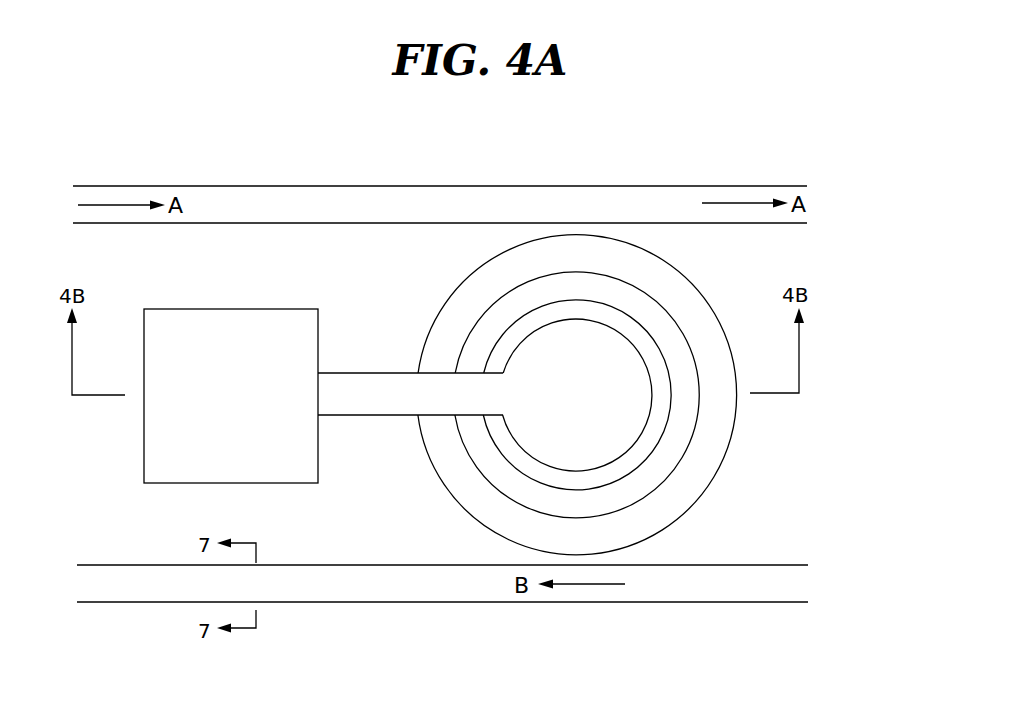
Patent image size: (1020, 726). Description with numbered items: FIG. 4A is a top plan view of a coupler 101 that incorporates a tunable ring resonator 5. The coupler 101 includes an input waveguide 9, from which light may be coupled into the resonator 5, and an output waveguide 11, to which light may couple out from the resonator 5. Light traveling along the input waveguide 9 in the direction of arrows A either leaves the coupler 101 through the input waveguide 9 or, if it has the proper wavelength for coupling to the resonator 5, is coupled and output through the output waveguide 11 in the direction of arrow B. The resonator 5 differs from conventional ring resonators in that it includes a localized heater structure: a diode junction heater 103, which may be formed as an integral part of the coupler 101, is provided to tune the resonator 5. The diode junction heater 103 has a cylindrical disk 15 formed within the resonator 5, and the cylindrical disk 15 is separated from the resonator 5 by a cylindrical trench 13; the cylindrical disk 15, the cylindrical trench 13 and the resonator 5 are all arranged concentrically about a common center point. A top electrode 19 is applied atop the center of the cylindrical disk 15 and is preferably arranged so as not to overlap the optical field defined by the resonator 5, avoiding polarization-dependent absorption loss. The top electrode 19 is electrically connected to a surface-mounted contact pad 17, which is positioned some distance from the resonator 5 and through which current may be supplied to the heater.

The tunable ring resonator 5 is at (688, 309).
The input waveguide 9 is at (617, 201).
The output waveguide 11 is at (132, 604).
The cylindrical trench 13 is at (480, 448).
The cylindrical disk 15 is at (662, 450).
The contact pad 17 is at (144, 433).
The top electrode 19 is at (523, 337).
The coupler 101 is at (610, 396).
The diode junction heater 103 is at (382, 474).